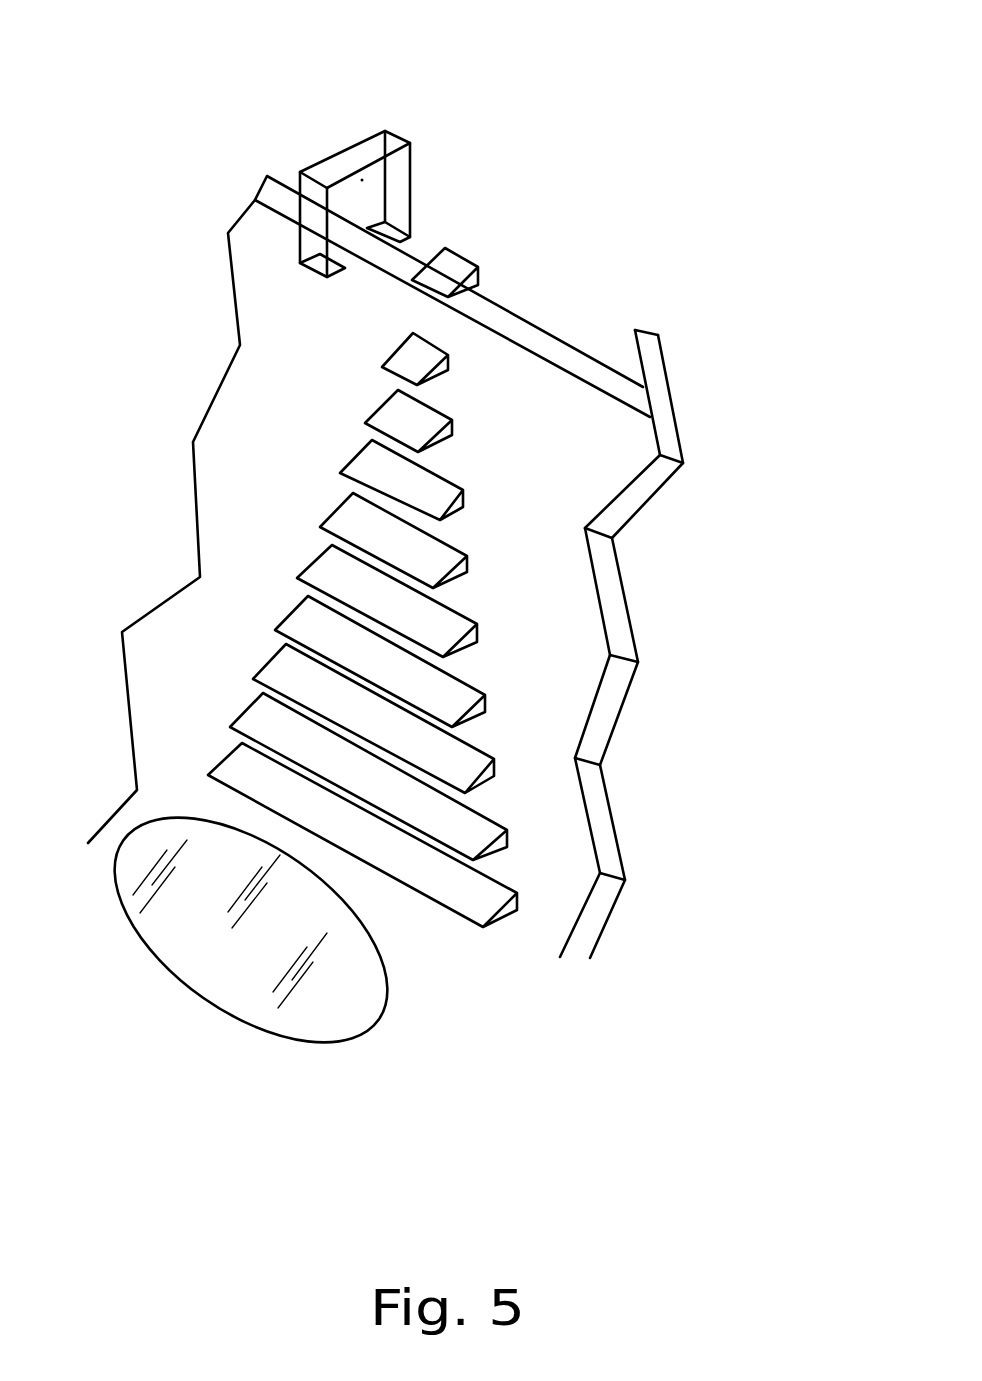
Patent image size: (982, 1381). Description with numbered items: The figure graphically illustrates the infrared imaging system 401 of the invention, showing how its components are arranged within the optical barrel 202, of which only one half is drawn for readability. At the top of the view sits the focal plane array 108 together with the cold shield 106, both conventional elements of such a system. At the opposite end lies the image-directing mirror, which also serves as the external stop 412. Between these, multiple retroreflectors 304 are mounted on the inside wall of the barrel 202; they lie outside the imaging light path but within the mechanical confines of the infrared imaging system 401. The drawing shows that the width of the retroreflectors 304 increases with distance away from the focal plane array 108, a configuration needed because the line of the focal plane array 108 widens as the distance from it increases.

The infrared imaging system 401 is at (186, 131).
The focal plane array 108 is at (357, 142).
The cold shield 106 is at (414, 195).
The retroreflectors 304 is at (475, 622).
The optical barrel 202 is at (550, 729).
The image-directing mirror / external stop 412 is at (387, 993).